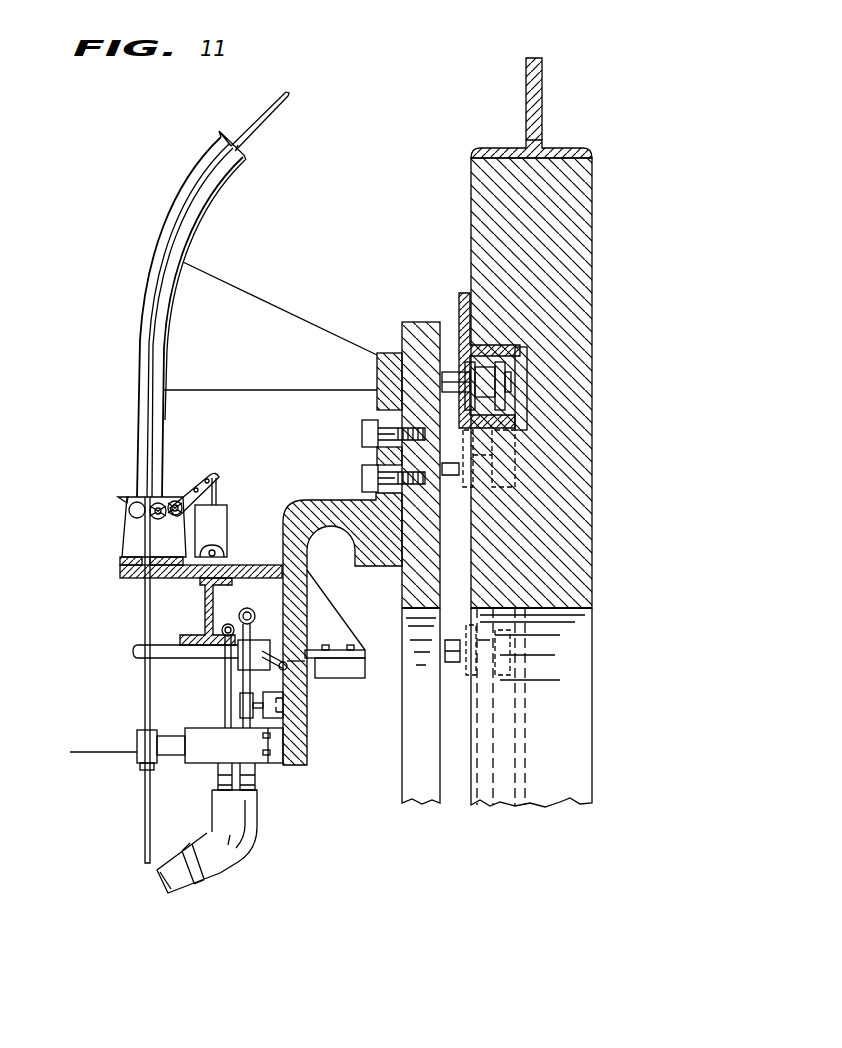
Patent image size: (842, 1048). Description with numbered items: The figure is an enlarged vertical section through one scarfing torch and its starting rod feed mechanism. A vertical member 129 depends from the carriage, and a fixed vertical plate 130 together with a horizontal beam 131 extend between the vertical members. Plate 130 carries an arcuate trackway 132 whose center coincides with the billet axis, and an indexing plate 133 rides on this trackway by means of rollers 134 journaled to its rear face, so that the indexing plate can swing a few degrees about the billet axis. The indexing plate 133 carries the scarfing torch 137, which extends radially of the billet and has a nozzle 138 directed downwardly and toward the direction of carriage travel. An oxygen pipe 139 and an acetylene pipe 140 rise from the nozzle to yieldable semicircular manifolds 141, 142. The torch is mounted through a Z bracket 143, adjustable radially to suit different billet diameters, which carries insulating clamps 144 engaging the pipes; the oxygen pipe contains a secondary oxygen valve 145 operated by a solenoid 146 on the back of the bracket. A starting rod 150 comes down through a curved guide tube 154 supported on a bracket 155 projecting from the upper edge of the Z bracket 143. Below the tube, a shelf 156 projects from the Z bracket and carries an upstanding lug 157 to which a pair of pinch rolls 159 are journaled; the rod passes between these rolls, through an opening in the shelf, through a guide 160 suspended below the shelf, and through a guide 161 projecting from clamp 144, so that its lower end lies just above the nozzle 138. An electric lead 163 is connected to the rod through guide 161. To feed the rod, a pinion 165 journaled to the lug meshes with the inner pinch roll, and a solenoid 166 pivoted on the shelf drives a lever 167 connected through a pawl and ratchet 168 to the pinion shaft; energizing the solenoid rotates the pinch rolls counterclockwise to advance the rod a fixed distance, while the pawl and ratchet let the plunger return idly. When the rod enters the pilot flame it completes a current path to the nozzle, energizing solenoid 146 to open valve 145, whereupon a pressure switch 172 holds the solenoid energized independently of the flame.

The vertical member 129 is at (580, 759).
The fixed vertical plate 130 is at (585, 276).
The horizontal beam 131 is at (540, 104).
The trackway 132 is at (460, 344).
The indexing plate 133 is at (402, 584).
The roller 134 is at (507, 400).
The scarfing torch 137 is at (248, 834).
The nozzle 138 is at (160, 878).
The oxygen pipe 139 is at (256, 697).
The acetylene pipe 140 is at (225, 702).
The oxygen manifold 141 is at (252, 606).
The acetylene manifold 142 is at (227, 625).
The Z bracket 143 is at (310, 500).
The clamp 144 is at (208, 761).
The secondary oxygen valve 145 is at (238, 661).
The solenoid 146 is at (355, 676).
The starting rod 150 is at (273, 110).
The curved guide tube 154 is at (175, 228).
The bracket 155 is at (275, 312).
The shelf 156 is at (122, 576).
The lug 157 is at (130, 542).
The pinch rolls 159 is at (128, 500).
The guide 160 is at (133, 652).
The guide 161 is at (137, 742).
The electric lead 163 is at (96, 753).
The pinion 165 is at (165, 500).
The solenoid 166 is at (226, 531).
The lever 167 is at (190, 490).
The pawl and ratchet 168 is at (217, 490).
The pressure switch 172 is at (283, 707).